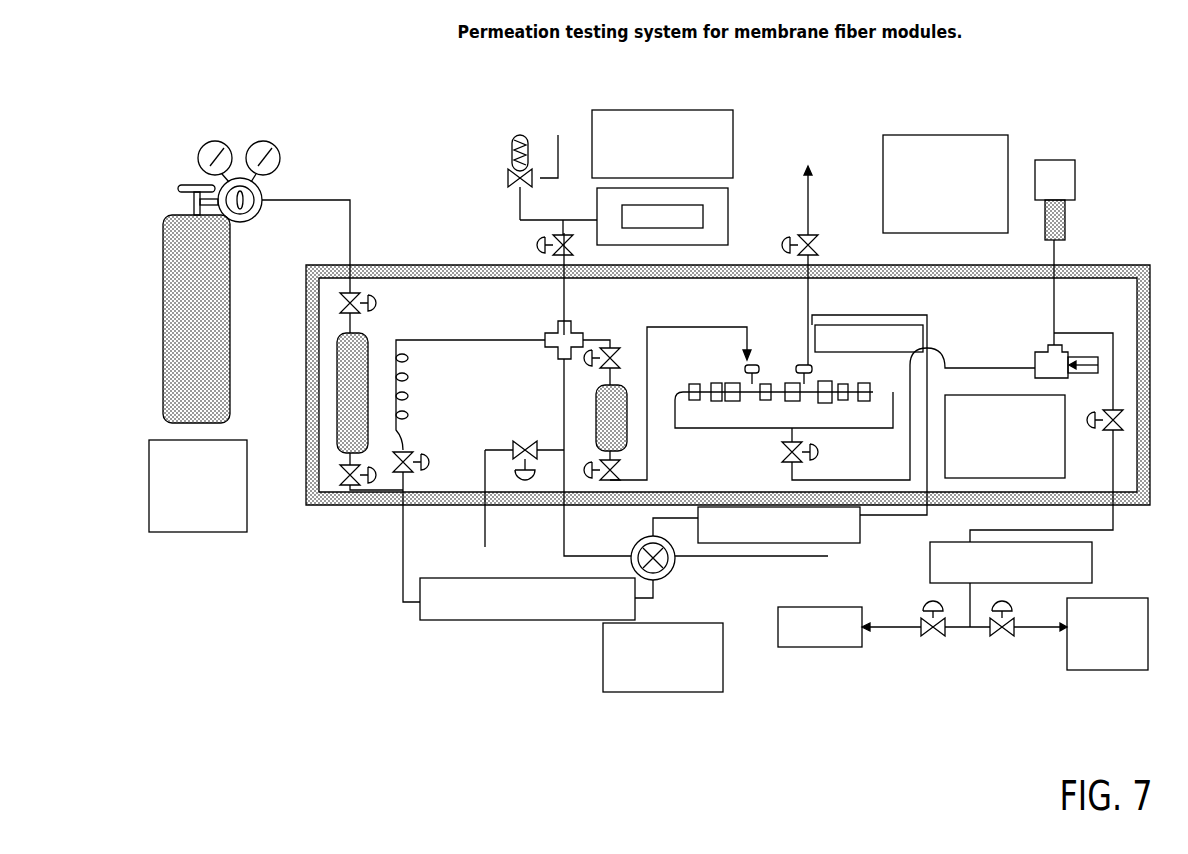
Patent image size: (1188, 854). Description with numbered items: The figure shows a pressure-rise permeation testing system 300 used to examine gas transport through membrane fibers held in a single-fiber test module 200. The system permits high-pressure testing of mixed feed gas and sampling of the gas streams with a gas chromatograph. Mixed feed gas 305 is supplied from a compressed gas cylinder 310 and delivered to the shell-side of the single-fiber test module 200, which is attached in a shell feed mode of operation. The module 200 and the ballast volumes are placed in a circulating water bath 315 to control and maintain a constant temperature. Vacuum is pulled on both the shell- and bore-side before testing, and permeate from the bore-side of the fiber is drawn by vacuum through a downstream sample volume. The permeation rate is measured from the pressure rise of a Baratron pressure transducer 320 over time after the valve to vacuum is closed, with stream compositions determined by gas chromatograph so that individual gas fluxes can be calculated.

The pressure-rise permeation testing system 300 is at (160, 712).
The mixed feed gas 305 is at (322, 200).
The compressed gas cylinder 310 is at (163, 312).
The circulating water bath 315 is at (1065, 445).
The Baratron pressure transducer 320 is at (1053, 160).
The single-fiber test module 200 is at (855, 402).